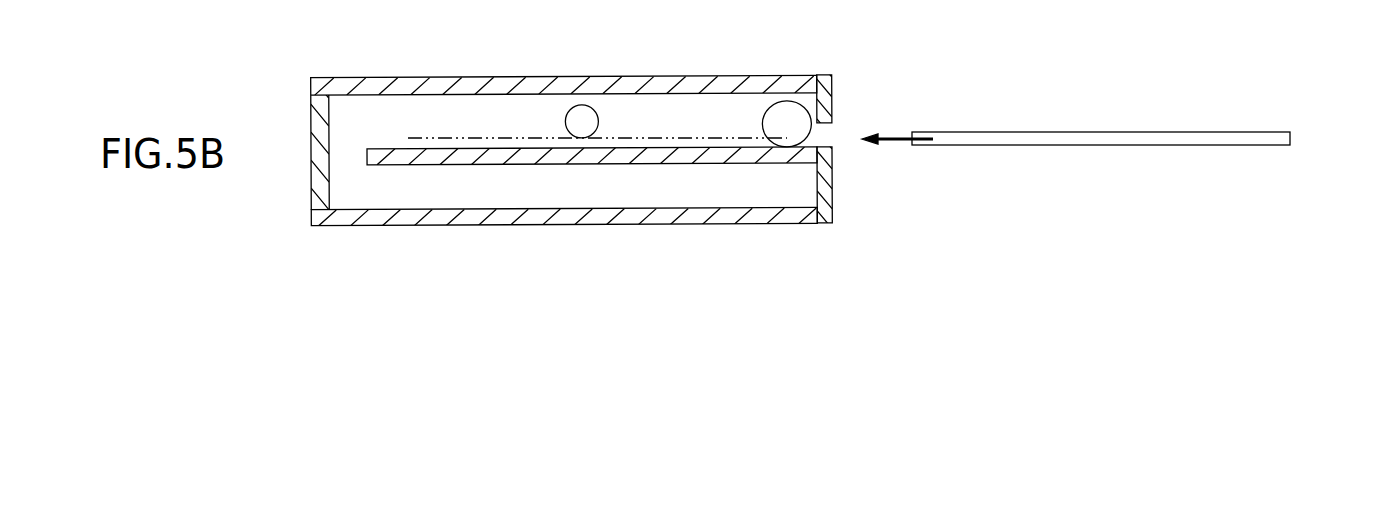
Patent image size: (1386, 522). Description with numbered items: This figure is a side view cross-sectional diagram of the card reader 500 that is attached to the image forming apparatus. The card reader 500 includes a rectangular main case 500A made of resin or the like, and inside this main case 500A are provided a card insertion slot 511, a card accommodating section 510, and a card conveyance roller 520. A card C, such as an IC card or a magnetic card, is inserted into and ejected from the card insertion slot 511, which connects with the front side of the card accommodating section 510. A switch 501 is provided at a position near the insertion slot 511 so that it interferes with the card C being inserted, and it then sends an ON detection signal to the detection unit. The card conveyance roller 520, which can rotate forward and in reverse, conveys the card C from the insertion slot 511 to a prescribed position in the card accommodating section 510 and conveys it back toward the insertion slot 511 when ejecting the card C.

The card reader 500 is at (574, 209).
The main case 500A is at (722, 217).
The switch 501 is at (787, 122).
The card insertion slot 511 is at (832, 149).
The card accommodating section 510 is at (385, 157).
The card conveyance roller 520 is at (582, 122).
The card C is at (437, 142).